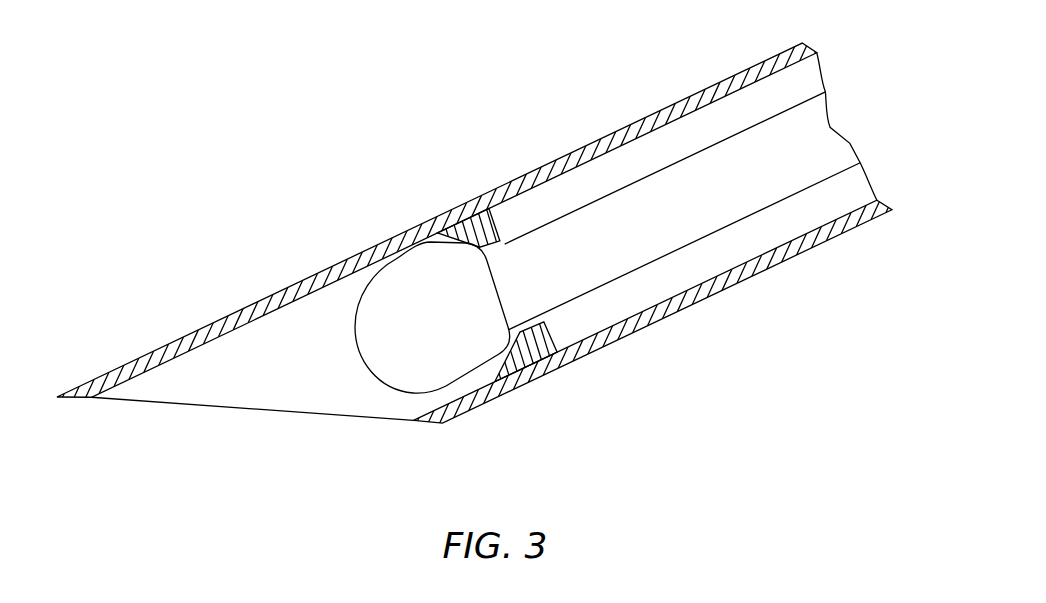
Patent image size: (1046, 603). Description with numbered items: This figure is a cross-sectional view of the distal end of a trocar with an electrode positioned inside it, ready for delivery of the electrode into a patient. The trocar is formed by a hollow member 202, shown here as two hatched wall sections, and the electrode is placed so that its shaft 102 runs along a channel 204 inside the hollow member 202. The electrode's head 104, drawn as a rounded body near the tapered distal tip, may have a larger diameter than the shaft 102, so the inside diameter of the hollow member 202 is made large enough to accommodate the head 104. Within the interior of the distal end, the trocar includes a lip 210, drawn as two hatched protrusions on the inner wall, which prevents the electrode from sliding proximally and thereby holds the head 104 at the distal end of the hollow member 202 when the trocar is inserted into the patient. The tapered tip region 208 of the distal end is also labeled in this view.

The shaft 102 is at (671, 210).
The head 104 is at (441, 340).
The hollow member 202 is at (476, 302).
The channel 204 is at (665, 168).
The tapered tip 208 is at (252, 409).
The lip 210 is at (489, 297).